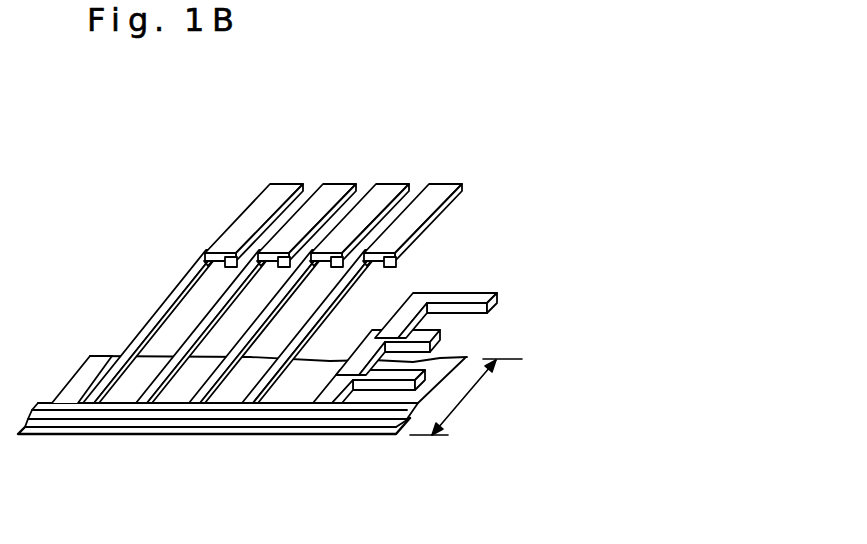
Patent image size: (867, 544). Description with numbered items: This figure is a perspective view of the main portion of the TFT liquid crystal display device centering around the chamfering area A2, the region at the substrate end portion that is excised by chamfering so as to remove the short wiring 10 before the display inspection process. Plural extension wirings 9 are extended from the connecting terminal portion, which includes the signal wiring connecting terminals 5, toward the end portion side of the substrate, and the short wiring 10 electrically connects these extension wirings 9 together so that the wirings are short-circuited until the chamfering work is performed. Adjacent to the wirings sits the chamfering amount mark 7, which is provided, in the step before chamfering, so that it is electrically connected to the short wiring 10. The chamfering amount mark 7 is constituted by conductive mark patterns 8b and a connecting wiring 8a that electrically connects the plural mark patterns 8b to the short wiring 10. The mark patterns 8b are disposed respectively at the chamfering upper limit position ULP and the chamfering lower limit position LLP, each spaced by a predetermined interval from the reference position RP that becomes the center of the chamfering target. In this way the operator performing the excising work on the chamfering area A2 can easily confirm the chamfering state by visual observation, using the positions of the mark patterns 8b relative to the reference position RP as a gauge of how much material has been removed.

The signal wiring connecting terminals 5 is at (268, 186).
The chamfering amount mark 7 is at (477, 267).
The connecting wiring 8a is at (443, 252).
The mark patterns 8b is at (433, 366).
The extension wirings 9 is at (157, 311).
The short wiring 10 is at (286, 422).
The chamfering upper limit position ULP is at (500, 313).
The reference position RP is at (443, 350).
The chamfering lower limit position LLP is at (447, 388).
The chamfering area A2 is at (458, 406).